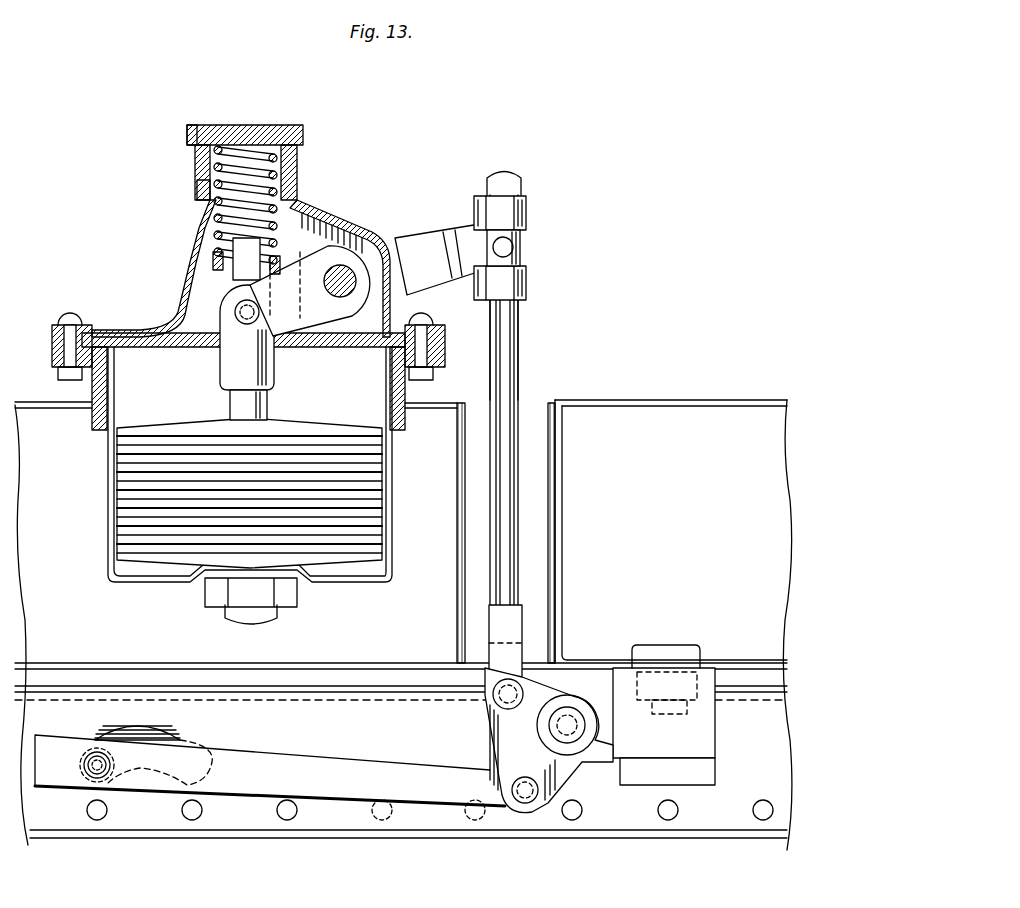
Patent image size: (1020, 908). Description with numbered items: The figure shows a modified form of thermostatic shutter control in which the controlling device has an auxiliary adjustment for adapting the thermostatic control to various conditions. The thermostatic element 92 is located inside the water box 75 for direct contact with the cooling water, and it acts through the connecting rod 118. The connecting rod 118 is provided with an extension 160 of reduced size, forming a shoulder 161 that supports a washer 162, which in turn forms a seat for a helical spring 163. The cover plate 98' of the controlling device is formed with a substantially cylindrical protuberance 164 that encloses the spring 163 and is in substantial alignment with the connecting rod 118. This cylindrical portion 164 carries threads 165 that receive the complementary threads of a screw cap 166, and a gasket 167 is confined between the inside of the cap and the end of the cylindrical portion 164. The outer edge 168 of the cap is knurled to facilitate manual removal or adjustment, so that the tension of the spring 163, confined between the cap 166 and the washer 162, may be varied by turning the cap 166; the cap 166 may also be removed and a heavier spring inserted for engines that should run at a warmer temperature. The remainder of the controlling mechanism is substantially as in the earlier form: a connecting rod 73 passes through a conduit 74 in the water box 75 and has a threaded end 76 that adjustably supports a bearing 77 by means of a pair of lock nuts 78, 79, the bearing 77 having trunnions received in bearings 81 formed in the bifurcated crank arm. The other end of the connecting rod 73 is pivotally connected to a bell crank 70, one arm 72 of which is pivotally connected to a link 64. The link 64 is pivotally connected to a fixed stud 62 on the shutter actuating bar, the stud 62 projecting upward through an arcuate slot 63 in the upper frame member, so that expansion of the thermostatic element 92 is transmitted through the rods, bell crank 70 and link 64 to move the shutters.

The fixed stud 62 is at (87, 750).
The arcuate slot 63 is at (175, 735).
The link 64 is at (375, 760).
The bell crank 70 is at (497, 733).
The arm of bell crank 72 is at (560, 785).
The connecting rod 73 is at (510, 382).
The conduit 74 is at (562, 535).
The water box 75 is at (650, 402).
The threaded end 76 is at (520, 340).
The bearing 77 is at (530, 232).
The lock nut 78 is at (528, 213).
The lock nut 79 is at (528, 285).
The bearing 81 is at (505, 247).
The thermostatic element 92 is at (355, 510).
The cover plate 98' is at (433, 247).
The connecting rod 118 is at (276, 372).
The extension 160 is at (287, 225).
The shoulder 161 is at (230, 278).
The washer 162 is at (212, 262).
The helical spring 163 is at (298, 176).
The cylindrical protuberance 164 is at (203, 190).
The threads 165 is at (306, 126).
The screw cap 166 is at (195, 165).
The gasket 167 is at (253, 142).
The outer edge of cap 168 is at (187, 128).